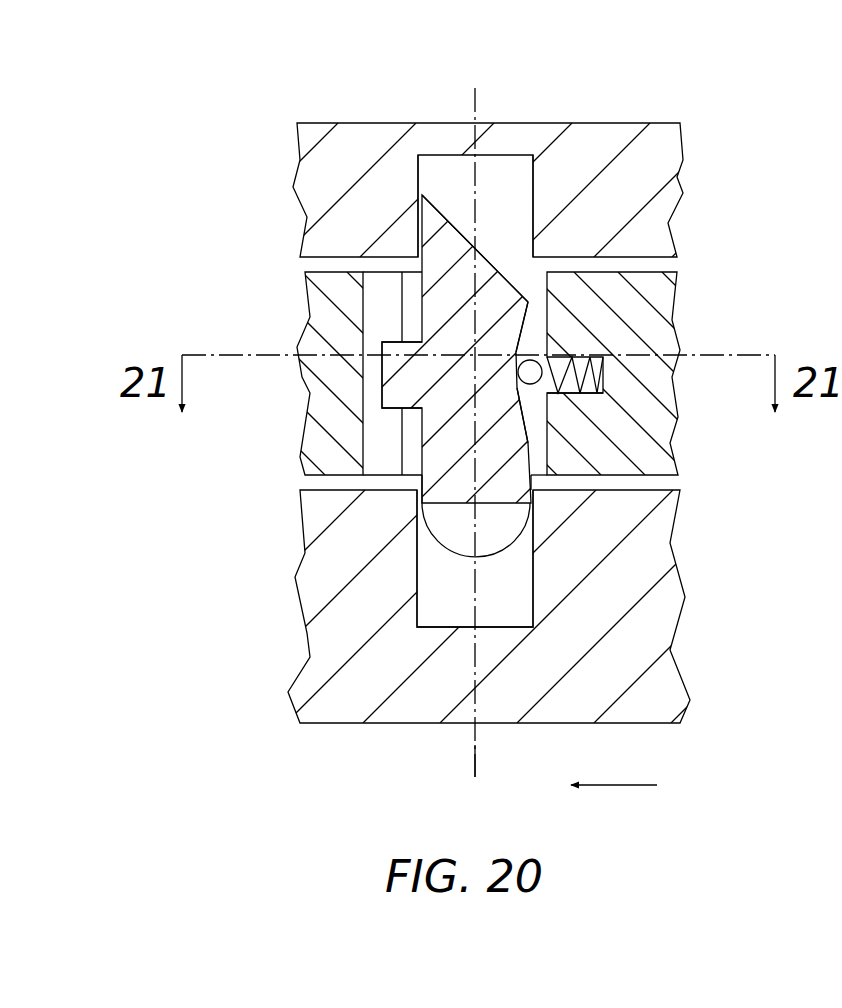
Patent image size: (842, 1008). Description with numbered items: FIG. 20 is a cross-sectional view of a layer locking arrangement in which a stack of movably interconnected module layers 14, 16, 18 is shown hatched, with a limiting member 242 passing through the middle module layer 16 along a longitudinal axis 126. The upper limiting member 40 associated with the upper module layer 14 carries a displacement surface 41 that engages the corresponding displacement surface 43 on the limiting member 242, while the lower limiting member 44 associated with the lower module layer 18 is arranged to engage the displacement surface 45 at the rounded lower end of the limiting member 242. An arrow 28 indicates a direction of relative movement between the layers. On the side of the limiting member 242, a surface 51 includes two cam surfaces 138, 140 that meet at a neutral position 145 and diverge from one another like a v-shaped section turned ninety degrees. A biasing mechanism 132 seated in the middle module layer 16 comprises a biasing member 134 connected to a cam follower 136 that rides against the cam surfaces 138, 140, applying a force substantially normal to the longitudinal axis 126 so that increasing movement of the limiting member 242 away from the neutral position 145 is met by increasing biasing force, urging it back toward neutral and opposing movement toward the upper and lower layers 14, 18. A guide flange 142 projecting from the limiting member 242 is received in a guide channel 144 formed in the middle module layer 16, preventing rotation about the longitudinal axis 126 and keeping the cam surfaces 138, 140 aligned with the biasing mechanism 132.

The module layer 14 is at (317, 132).
The middle module layer 16 is at (305, 292).
The module layer 18 is at (300, 640).
The direction of movement 28 is at (605, 785).
The limiting member 40 is at (498, 148).
The displacement surface 41 is at (548, 246).
The displacement surface 43 is at (489, 243).
The limiting member 44 is at (427, 643).
The displacement surface 45 is at (428, 548).
The locking surface 51 is at (548, 483).
The longitudinal axis 126 is at (476, 745).
The biasing mechanism 132 is at (578, 356).
The biasing member 134 is at (518, 386).
The cam follower 136 is at (538, 460).
The cam surface 138 is at (612, 343).
The cam surface 140 is at (550, 398).
The guide flange 142 is at (392, 395).
The guide channel 144 is at (376, 353).
The neutral position 145 is at (497, 365).
The limiting member 242 is at (417, 482).